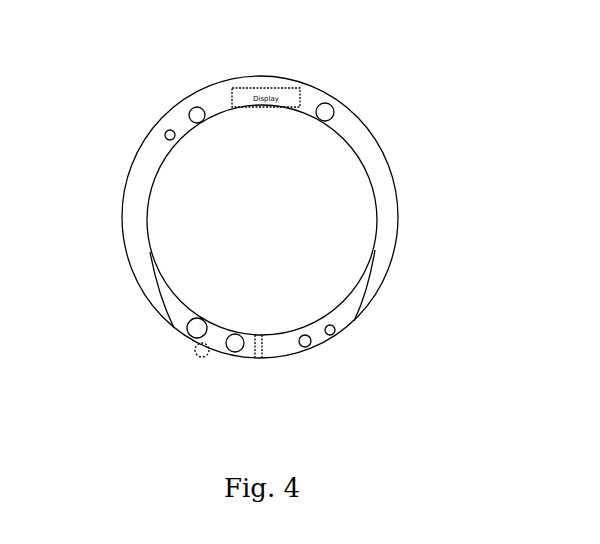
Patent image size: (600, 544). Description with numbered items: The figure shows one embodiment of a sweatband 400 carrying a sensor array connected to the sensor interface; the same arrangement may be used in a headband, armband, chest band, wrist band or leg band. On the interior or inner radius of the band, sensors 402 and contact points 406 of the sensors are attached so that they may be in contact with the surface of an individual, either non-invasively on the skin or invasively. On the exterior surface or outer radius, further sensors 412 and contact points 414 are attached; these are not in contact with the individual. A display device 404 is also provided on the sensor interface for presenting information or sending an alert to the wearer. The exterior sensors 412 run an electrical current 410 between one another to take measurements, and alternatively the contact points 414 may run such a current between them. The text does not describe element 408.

The sweatband 400 is at (253, 357).
The sensor 402 is at (343, 110).
The display device 404 is at (281, 78).
The contact point 406 is at (172, 131).
The clasp 408 is at (267, 346).
The electrical current 410 is at (195, 356).
The sensor 412 is at (183, 327).
The contact point 414 is at (302, 360).